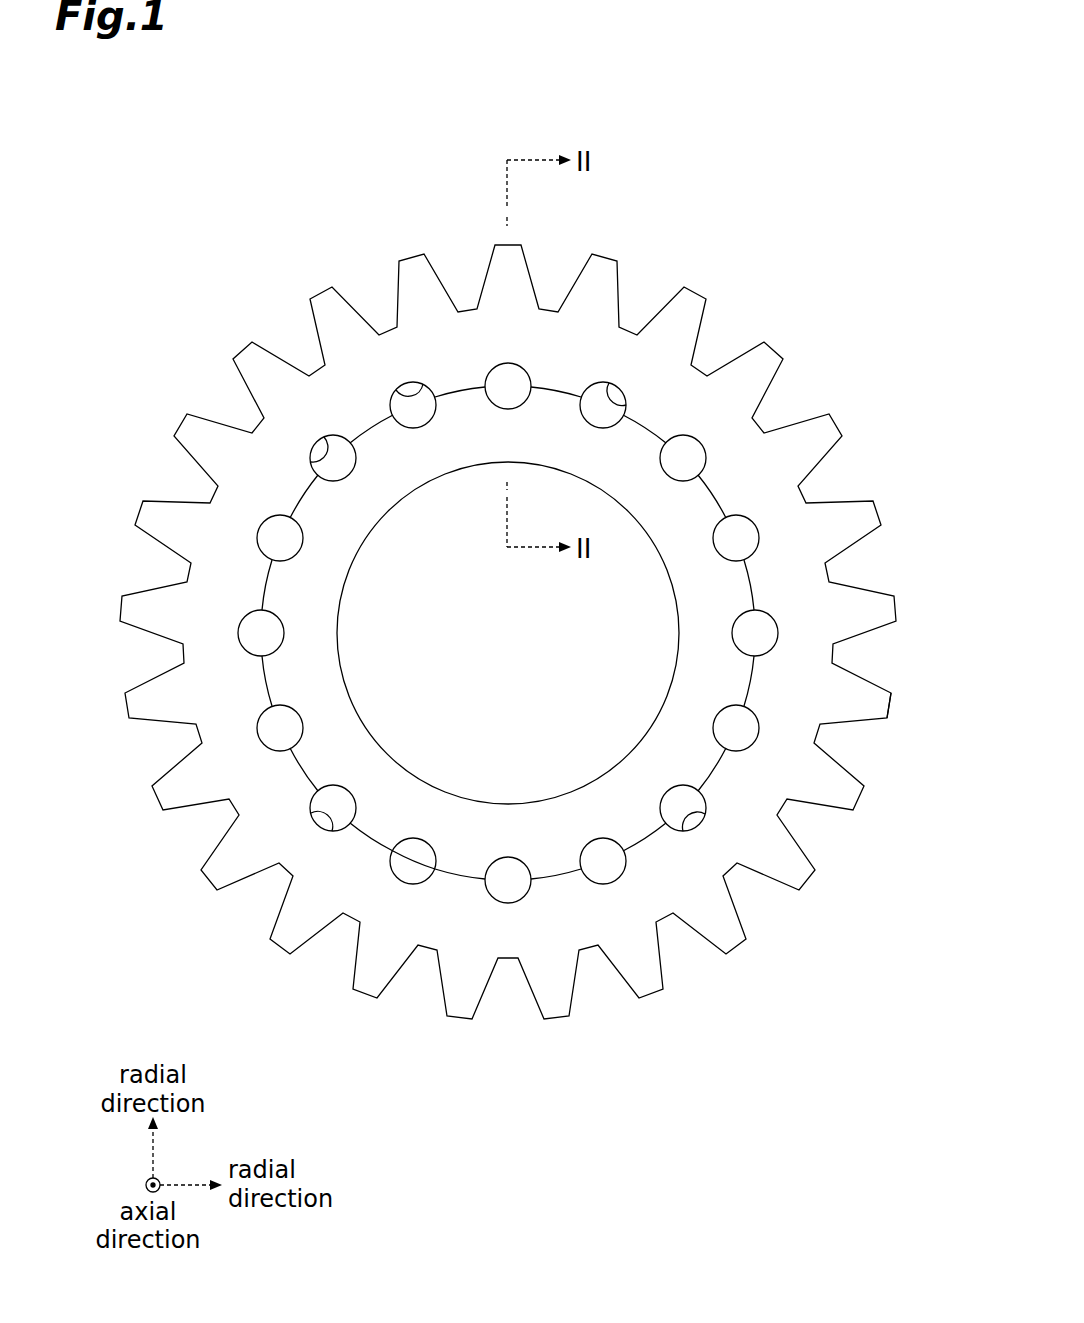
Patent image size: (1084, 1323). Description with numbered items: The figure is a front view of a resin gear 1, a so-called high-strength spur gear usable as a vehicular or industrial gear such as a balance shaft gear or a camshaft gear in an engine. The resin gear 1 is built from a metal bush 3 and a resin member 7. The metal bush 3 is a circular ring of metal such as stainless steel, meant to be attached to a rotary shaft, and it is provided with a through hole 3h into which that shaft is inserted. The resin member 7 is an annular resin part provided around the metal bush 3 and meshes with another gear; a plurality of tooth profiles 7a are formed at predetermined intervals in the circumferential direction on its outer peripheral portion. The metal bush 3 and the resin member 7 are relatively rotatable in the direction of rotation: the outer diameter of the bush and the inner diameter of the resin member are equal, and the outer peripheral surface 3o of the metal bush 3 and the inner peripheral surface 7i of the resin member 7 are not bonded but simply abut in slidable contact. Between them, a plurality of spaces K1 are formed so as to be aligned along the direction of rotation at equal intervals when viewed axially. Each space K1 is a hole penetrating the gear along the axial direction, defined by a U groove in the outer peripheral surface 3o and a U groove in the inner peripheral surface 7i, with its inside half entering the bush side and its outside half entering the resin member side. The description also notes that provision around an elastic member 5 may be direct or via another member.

The resin gear 1 is at (878, 210).
The metal bush 3 is at (508, 729).
The through hole 3h is at (607, 695).
The outer peripheral surface 3o is at (553, 875).
The elastic member 5 is at (600, 395).
The resin member 7 is at (545, 335).
The tooth profile 7a is at (867, 724).
The inner peripheral surface 7i is at (433, 860).
The space K1 is at (409, 387).